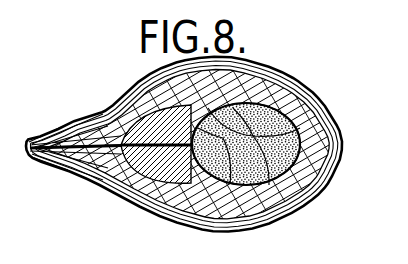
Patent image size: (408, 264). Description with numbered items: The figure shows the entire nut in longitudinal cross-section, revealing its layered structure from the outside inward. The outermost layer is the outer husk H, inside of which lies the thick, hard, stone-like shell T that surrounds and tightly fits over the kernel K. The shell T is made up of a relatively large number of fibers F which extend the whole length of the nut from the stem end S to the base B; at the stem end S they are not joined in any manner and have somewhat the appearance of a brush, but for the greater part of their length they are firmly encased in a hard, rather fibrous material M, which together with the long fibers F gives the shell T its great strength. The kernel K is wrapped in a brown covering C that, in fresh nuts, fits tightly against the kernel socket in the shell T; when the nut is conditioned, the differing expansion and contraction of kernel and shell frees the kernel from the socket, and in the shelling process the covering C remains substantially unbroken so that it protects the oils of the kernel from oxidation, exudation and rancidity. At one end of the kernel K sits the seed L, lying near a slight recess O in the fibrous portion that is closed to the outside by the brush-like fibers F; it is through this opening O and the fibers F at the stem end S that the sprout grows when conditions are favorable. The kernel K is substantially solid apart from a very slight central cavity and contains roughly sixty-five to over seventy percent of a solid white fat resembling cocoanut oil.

The shell T is at (314, 103).
The recess O is at (98, 101).
The base B is at (329, 134).
The outer husk H is at (289, 72).
The fibrous material M is at (112, 197).
The stem end S is at (28, 148).
The fibers F is at (66, 156).
The seed L is at (100, 175).
The kernel K is at (260, 177).
The covering C is at (222, 176).